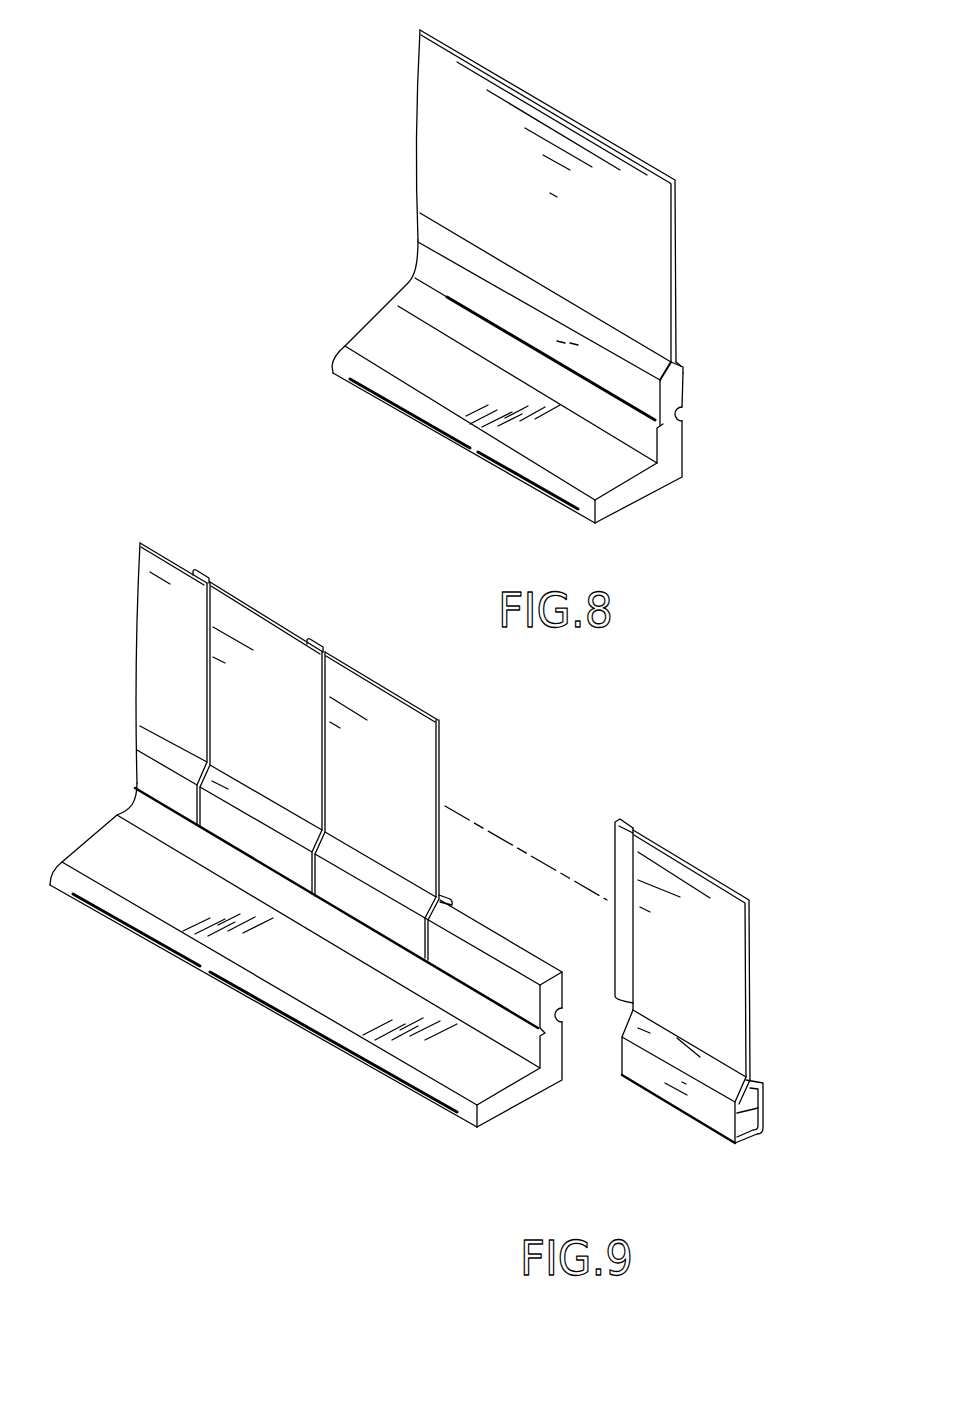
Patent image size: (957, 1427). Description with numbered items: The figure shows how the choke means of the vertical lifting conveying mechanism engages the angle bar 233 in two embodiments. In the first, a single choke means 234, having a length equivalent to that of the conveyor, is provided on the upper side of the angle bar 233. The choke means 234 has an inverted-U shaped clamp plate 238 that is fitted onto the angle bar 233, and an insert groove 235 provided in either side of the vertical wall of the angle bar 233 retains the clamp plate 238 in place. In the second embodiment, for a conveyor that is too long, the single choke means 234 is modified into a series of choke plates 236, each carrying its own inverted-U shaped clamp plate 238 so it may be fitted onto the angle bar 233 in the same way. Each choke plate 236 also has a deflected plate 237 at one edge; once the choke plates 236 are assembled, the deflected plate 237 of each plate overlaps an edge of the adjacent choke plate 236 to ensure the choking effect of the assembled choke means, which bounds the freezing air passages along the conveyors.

In FIG. 8, the angle bar 233 is at (640, 487).
In FIG. 9, the angle bar 233 is at (512, 1102).
In FIG. 8, the choke means 234 is at (655, 271).
In FIG. 8, the insert groove 235 is at (688, 414).
In FIG. 9, the insert groove 235 is at (565, 1015).
In FIG. 9, the choke plate 236 is at (172, 560).
In FIG. 9, the deflected plate 237 is at (212, 577).
In FIG. 8, the inverted-U shaped clamp plate 238 is at (689, 374).
In FIG. 9, the inverted-U shaped clamp plate 238 is at (442, 898).